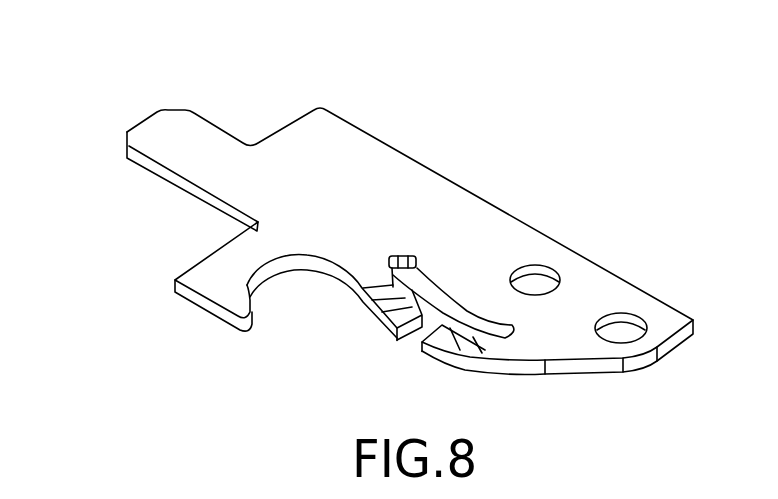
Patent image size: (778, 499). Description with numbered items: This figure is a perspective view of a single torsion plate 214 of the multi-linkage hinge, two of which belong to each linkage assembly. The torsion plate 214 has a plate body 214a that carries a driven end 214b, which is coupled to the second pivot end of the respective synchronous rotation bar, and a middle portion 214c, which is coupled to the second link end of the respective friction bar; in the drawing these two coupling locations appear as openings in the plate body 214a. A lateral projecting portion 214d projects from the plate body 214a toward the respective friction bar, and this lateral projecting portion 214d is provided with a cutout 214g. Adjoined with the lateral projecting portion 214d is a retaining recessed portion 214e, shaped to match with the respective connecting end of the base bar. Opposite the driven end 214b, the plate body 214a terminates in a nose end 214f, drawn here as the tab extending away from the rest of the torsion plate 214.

The torsion plate 214 is at (382, 110).
The plate body 214a is at (430, 207).
The driven end 214b is at (629, 320).
The middle portion 214c is at (541, 273).
The lateral projecting portion 214d is at (458, 337).
The retaining recessed portion 214e is at (302, 302).
The nose end 214f is at (165, 132).
The cutout 214g is at (410, 346).